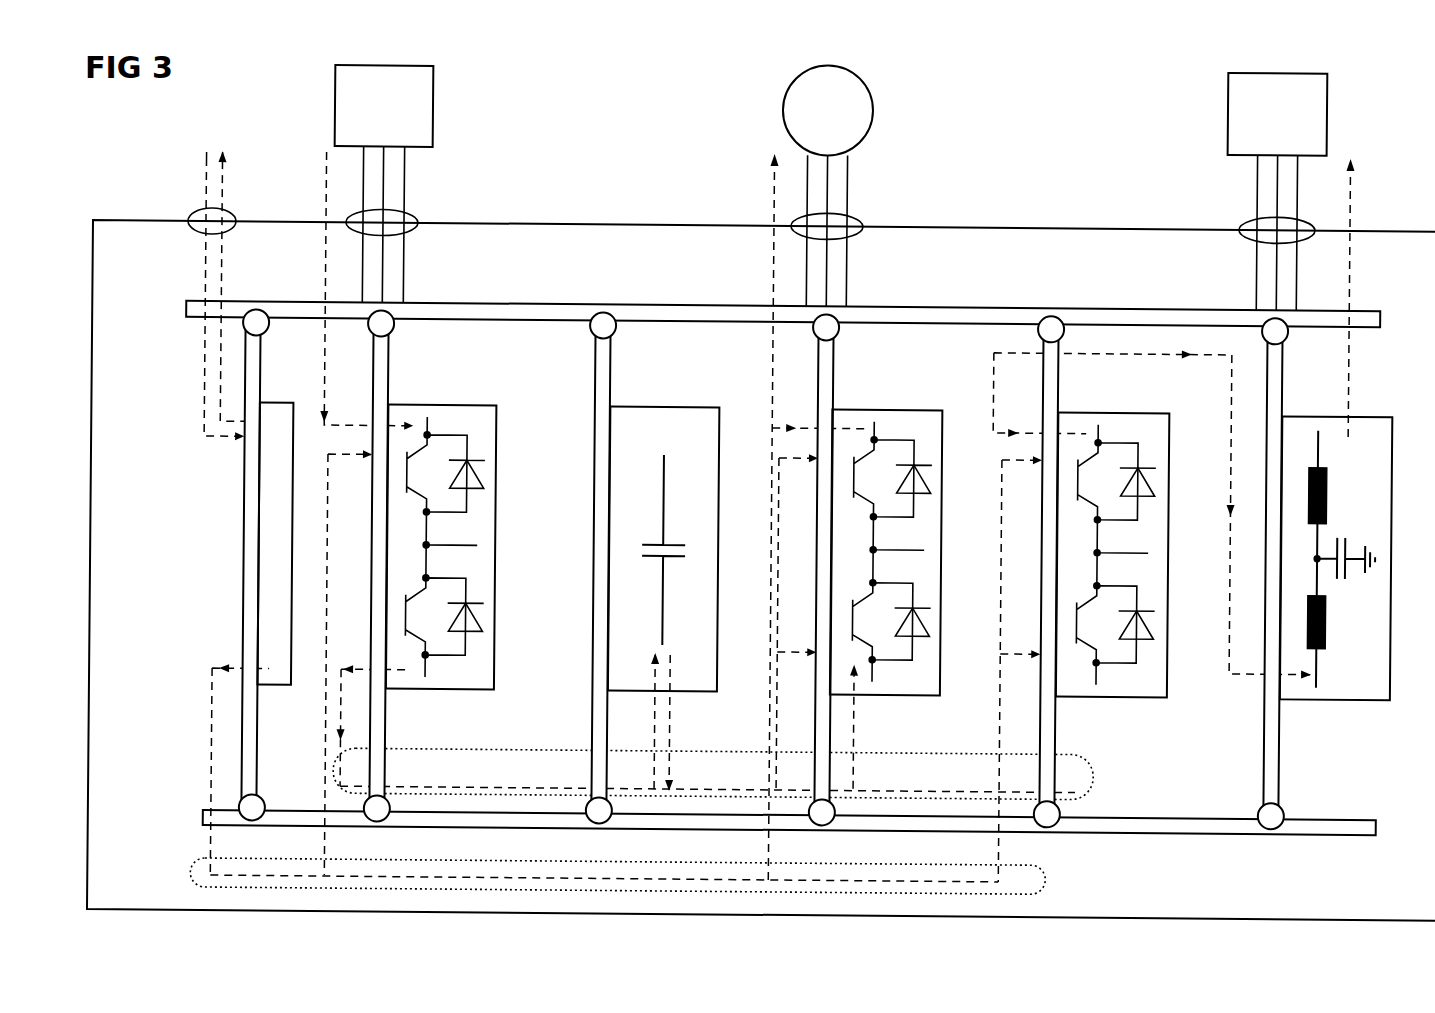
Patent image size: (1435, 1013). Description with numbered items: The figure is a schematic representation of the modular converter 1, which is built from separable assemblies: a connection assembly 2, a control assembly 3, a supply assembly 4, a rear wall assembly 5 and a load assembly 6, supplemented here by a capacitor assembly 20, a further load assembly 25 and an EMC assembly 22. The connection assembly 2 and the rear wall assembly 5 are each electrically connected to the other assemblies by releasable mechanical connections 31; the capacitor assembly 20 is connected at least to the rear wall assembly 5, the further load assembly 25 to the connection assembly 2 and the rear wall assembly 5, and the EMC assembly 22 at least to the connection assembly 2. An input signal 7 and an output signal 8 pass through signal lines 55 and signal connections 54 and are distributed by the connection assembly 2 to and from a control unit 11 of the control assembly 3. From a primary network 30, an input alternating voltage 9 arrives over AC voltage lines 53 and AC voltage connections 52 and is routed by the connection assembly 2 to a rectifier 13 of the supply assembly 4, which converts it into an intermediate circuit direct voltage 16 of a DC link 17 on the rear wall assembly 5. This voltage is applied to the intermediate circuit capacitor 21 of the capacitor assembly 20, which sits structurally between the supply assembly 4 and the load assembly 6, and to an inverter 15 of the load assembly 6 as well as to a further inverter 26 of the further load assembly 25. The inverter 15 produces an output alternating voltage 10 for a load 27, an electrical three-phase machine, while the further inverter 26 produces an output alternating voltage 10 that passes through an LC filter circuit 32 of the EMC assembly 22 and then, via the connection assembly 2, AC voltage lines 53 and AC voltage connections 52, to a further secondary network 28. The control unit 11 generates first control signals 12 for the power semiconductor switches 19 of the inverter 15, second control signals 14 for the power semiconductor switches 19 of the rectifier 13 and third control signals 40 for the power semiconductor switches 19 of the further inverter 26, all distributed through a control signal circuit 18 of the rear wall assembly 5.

The modular converter 1 is at (1014, 220).
The connection assembly 2 is at (940, 300).
The control assembly 3 is at (263, 342).
The supply assembly 4 is at (392, 360).
The rear wall assembly 5 is at (1384, 822).
The load assembly 6 is at (836, 366).
The input signal 7 is at (205, 263).
The output signal 8 is at (223, 275).
The input alternating voltage 9 is at (325, 238).
The output alternating voltage 10 is at (771, 272).
The control unit 11 is at (280, 685).
The first control signals 12 is at (772, 779).
The rectifier 13 is at (474, 402).
The second control signals 14 is at (336, 786).
The inverter 15 is at (926, 403).
The intermediate circuit direct voltage 16 is at (347, 703).
The DC link 17 is at (1098, 782).
The control signal circuit 18 is at (190, 872).
The power semiconductor switches 19 is at (424, 490).
The capacitor assembly 20 is at (596, 424).
The intermediate circuit capacitor 21 is at (699, 402).
The EMC assembly 22 is at (1286, 732).
The further load assembly 25 is at (1061, 378).
The further inverter 26 is at (1167, 685).
The load 27 is at (872, 104).
The further secondary network 28 is at (1327, 110).
The primary network 30 is at (433, 104).
The releasable mechanical connections 31 is at (246, 323).
The LC filter circuit 32 is at (1370, 406).
The third control signals 40 is at (1000, 778).
The AC voltage connections 52 is at (415, 210).
The AC voltage lines 53 is at (829, 228).
The signal connections 54 is at (230, 208).
The signal lines 55 is at (215, 156).